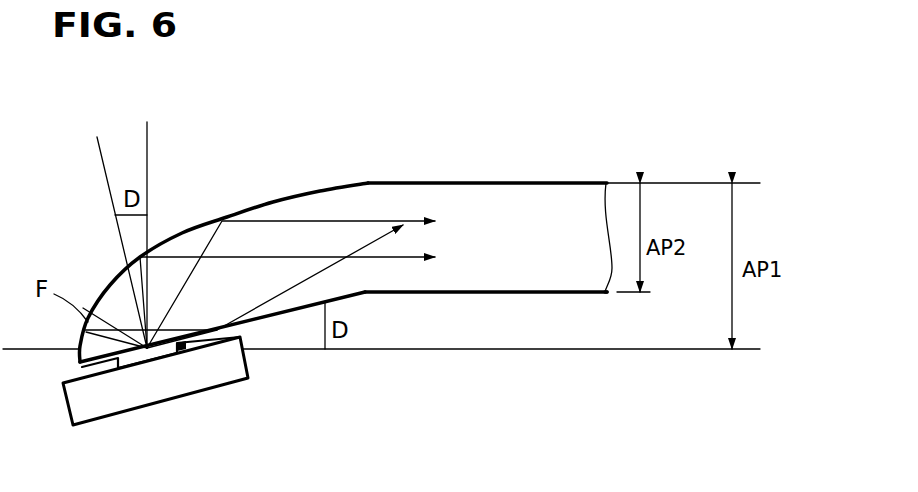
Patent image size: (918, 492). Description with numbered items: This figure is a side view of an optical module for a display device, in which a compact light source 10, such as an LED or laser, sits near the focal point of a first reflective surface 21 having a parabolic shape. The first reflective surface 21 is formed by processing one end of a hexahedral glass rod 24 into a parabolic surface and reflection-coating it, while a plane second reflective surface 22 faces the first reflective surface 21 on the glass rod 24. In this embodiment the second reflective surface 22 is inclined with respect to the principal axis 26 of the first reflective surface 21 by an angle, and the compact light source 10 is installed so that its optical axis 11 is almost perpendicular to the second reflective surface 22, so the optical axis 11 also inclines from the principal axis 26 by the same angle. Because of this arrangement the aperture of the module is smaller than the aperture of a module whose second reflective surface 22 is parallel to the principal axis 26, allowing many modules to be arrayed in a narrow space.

The compact light source 10 is at (210, 391).
The optical axis 11 is at (106, 176).
The first reflective surface 21 is at (272, 201).
The second reflective surface 22 is at (283, 315).
The glass rod 24 is at (501, 182).
The principal axis 26 is at (441, 351).